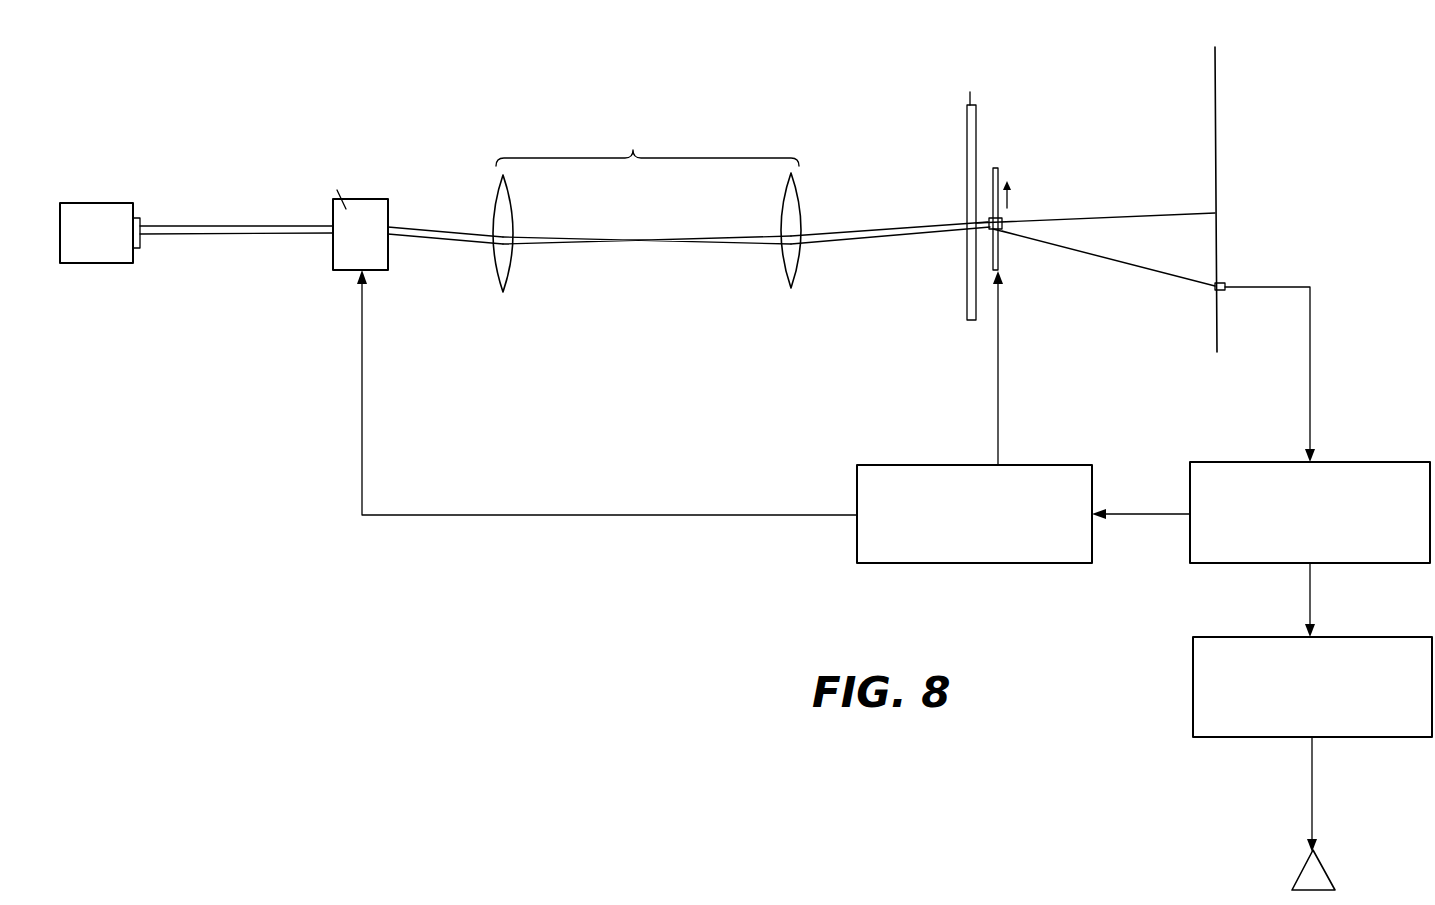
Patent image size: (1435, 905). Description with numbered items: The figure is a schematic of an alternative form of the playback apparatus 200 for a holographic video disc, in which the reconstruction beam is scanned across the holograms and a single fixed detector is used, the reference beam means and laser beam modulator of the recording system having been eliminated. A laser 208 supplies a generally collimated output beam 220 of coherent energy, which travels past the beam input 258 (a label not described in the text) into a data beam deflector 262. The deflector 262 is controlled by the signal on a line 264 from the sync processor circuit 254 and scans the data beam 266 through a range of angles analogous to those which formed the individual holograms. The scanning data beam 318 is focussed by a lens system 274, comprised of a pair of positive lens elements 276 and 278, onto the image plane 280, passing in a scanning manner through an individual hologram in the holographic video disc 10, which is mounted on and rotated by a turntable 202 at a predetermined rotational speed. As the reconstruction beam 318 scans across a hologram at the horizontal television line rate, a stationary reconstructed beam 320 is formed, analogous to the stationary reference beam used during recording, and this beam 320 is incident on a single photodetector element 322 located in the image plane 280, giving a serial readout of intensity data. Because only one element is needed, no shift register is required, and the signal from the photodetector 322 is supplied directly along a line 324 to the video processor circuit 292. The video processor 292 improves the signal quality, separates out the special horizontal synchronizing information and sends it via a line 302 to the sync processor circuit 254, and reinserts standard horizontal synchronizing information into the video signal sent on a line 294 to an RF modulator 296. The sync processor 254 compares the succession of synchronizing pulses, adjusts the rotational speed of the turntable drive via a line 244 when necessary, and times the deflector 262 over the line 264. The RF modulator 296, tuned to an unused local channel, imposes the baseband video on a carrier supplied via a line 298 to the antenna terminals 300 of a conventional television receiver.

The playback apparatus 200 is at (703, 84).
The laser 208 is at (115, 263).
The output beam 220 is at (171, 222).
The beam input to deflector 258 is at (326, 236).
The data beam deflector 262 is at (390, 253).
The line 264 is at (362, 428).
The data beam 266 is at (453, 230).
The lens system 274 is at (647, 183).
The positive lens element 276 is at (512, 263).
The positive lens element 278 is at (800, 278).
The scanning data beam 318 is at (875, 243).
The holographic video disc 10 is at (976, 135).
The turntable 202 is at (998, 172).
The line 244 is at (998, 412).
The image plane 280 is at (1215, 140).
The reconstructed beam 320 is at (1127, 267).
The photodetector element 322 is at (1225, 280).
The line 324 is at (1310, 395).
The video processor circuit 292 is at (1230, 462).
The line 302 is at (1143, 510).
The sync processor circuit 254 is at (863, 465).
The line 294 is at (1310, 580).
The RF modulator 296 is at (1193, 707).
The line 298 is at (1310, 772).
The antenna terminals 300 is at (1307, 867).